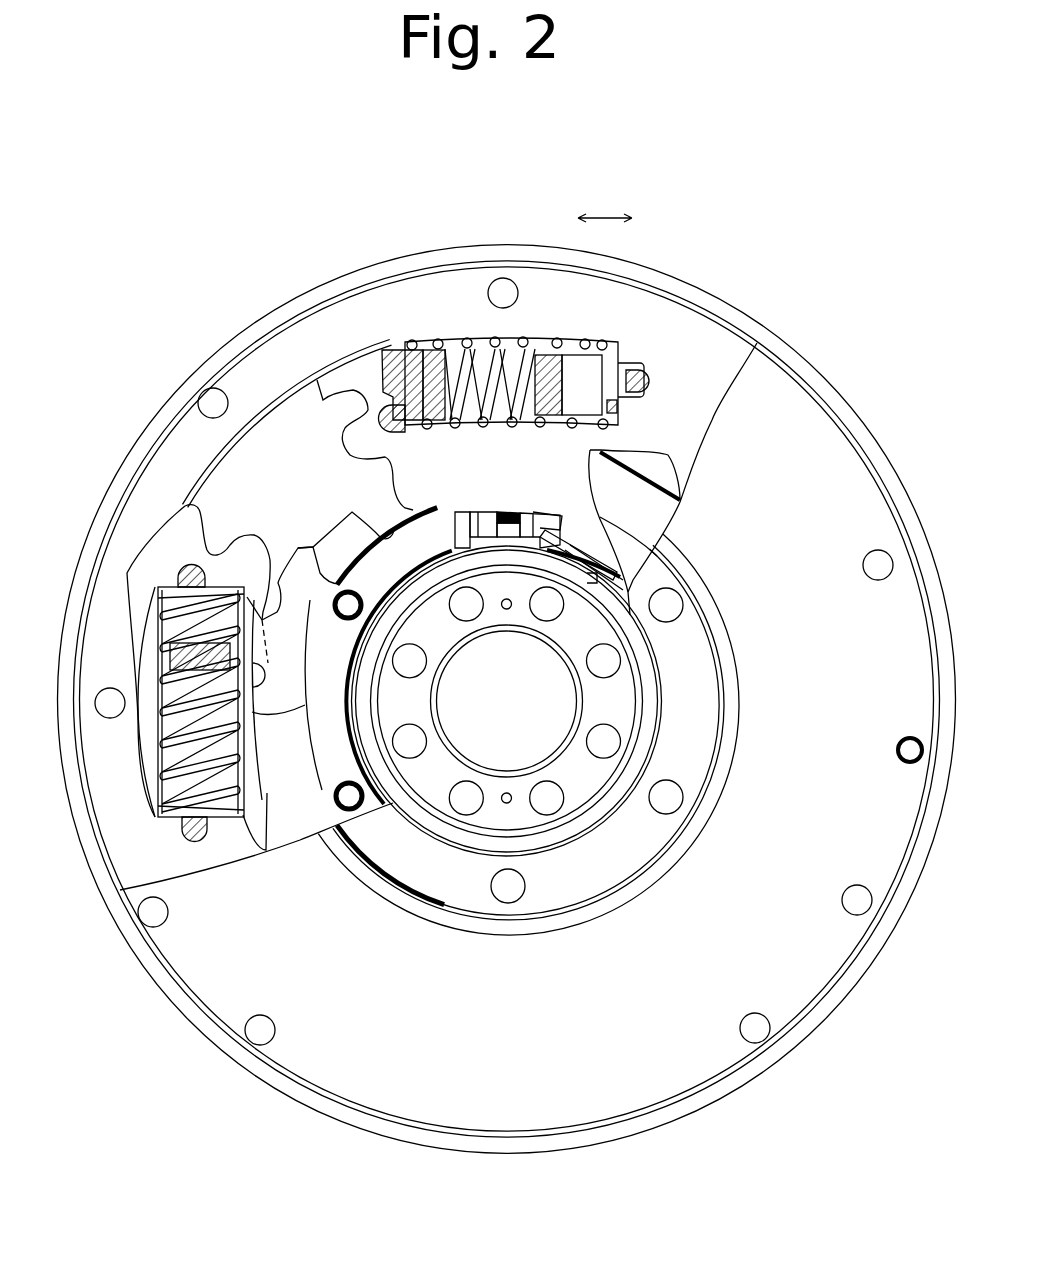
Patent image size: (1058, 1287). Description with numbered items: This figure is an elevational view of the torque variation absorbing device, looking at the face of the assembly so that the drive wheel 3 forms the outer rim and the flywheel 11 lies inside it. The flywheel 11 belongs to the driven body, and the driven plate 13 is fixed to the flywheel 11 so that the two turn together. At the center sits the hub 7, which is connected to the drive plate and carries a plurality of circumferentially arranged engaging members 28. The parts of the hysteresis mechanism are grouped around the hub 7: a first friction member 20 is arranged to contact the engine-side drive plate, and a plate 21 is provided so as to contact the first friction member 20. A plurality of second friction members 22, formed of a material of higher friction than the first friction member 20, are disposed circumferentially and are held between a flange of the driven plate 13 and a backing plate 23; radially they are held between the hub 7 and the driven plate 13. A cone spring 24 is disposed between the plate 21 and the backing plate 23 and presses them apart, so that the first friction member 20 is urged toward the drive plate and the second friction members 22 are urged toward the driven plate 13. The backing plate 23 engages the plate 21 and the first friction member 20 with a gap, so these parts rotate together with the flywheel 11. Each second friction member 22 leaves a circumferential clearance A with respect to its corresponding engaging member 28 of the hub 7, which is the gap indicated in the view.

The drive wheel 3 is at (322, 322).
The flywheel 11 is at (830, 480).
The driven plate 13 is at (410, 507).
The backing plate 23 is at (462, 532).
The cone spring 24 is at (483, 530).
The engaging members 28 is at (502, 535).
The plate 21 is at (522, 535).
The first friction member 20 is at (545, 528).
The second friction members 22 is at (590, 565).
The hub 7 is at (607, 560).
The circumferential clearance A is at (553, 540).